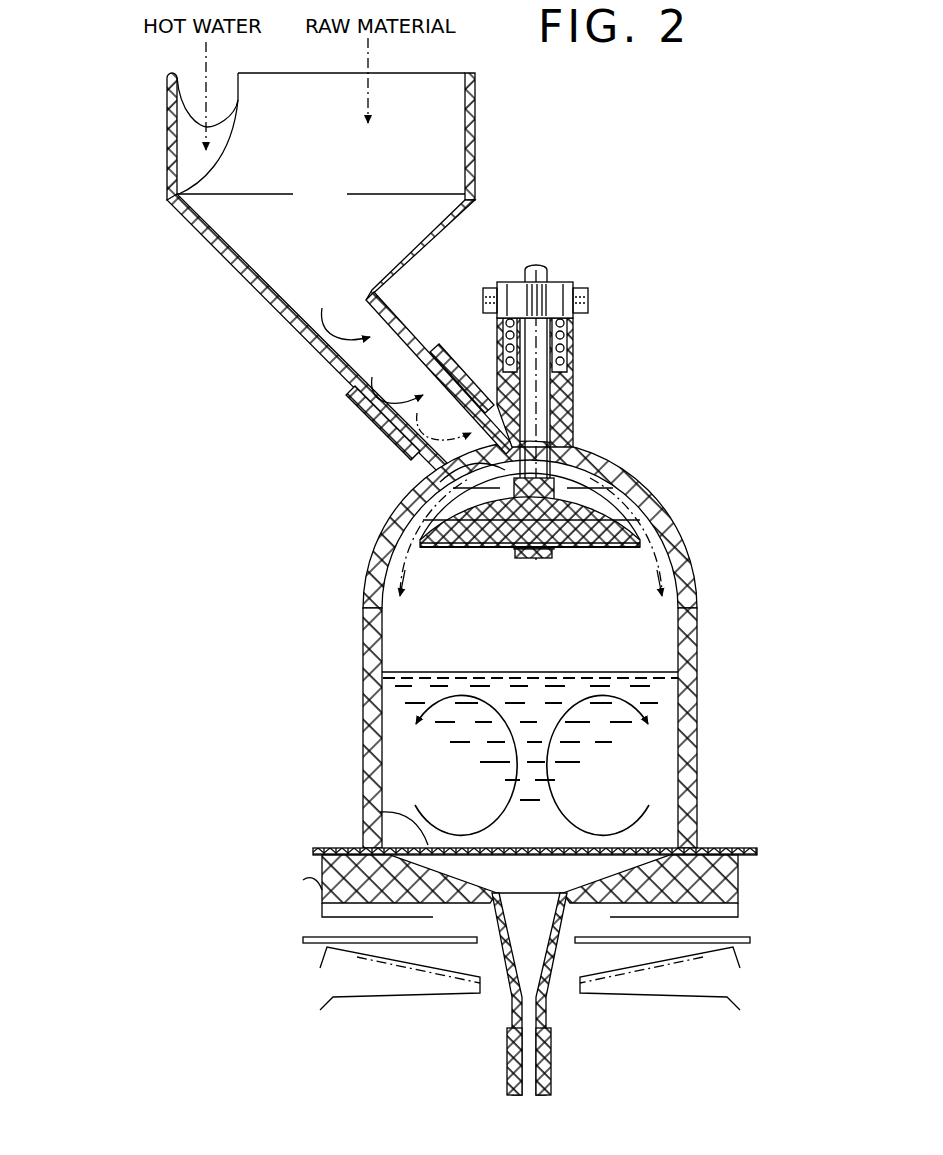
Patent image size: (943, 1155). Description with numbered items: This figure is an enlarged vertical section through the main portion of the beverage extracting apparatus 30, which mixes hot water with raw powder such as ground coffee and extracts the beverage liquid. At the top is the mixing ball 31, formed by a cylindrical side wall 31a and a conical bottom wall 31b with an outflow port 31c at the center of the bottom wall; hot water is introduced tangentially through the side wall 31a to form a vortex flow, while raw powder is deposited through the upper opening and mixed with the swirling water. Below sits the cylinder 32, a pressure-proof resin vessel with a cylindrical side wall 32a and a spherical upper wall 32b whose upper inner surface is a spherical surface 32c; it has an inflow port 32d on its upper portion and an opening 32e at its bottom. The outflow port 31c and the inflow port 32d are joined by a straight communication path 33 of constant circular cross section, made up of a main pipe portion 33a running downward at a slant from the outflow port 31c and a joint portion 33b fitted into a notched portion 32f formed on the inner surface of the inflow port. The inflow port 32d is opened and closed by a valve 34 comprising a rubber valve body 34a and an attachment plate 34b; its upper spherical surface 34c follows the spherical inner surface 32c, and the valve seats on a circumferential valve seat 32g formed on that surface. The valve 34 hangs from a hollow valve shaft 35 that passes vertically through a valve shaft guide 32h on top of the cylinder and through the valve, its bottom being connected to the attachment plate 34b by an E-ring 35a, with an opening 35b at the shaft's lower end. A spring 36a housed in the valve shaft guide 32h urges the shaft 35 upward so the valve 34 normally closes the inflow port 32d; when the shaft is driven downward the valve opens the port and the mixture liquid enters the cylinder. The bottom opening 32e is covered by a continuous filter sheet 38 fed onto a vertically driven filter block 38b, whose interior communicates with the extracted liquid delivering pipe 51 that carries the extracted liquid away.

The beverage extracting apparatus 30 is at (534, 218).
The mixing ball 31 is at (317, 272).
The cylindrical side wall 31a is at (170, 152).
The conical bottom wall 31b is at (222, 258).
The outflow port 31c is at (350, 300).
The cylinder 32 is at (537, 635).
The cylindrical side wall 32a is at (697, 665).
The spherical upper wall 32b is at (630, 476).
The spherical surface 32c is at (662, 498).
The inflow port 32d is at (432, 477).
The opening 32e is at (428, 845).
The notched portion 32f is at (453, 334).
The valve seat 32g is at (605, 480).
The valve shaft guide 32h is at (577, 382).
The communication path 33 is at (397, 386).
The main pipe portion 33a is at (392, 320).
The joint portion 33b is at (388, 436).
The valve 34 is at (496, 558).
The rubber valve body 34a is at (455, 553).
The attachment plate 34b is at (488, 548).
The spherical surface 34c is at (424, 516).
The valve shaft 35 is at (546, 430).
The E-ring 35a is at (553, 548).
The opening 35b is at (532, 557).
The spring 36a is at (566, 360).
The filter 38 is at (535, 929).
The filter block 38b is at (745, 928).
The extracted liquid delivering pipe 51 is at (550, 1076).